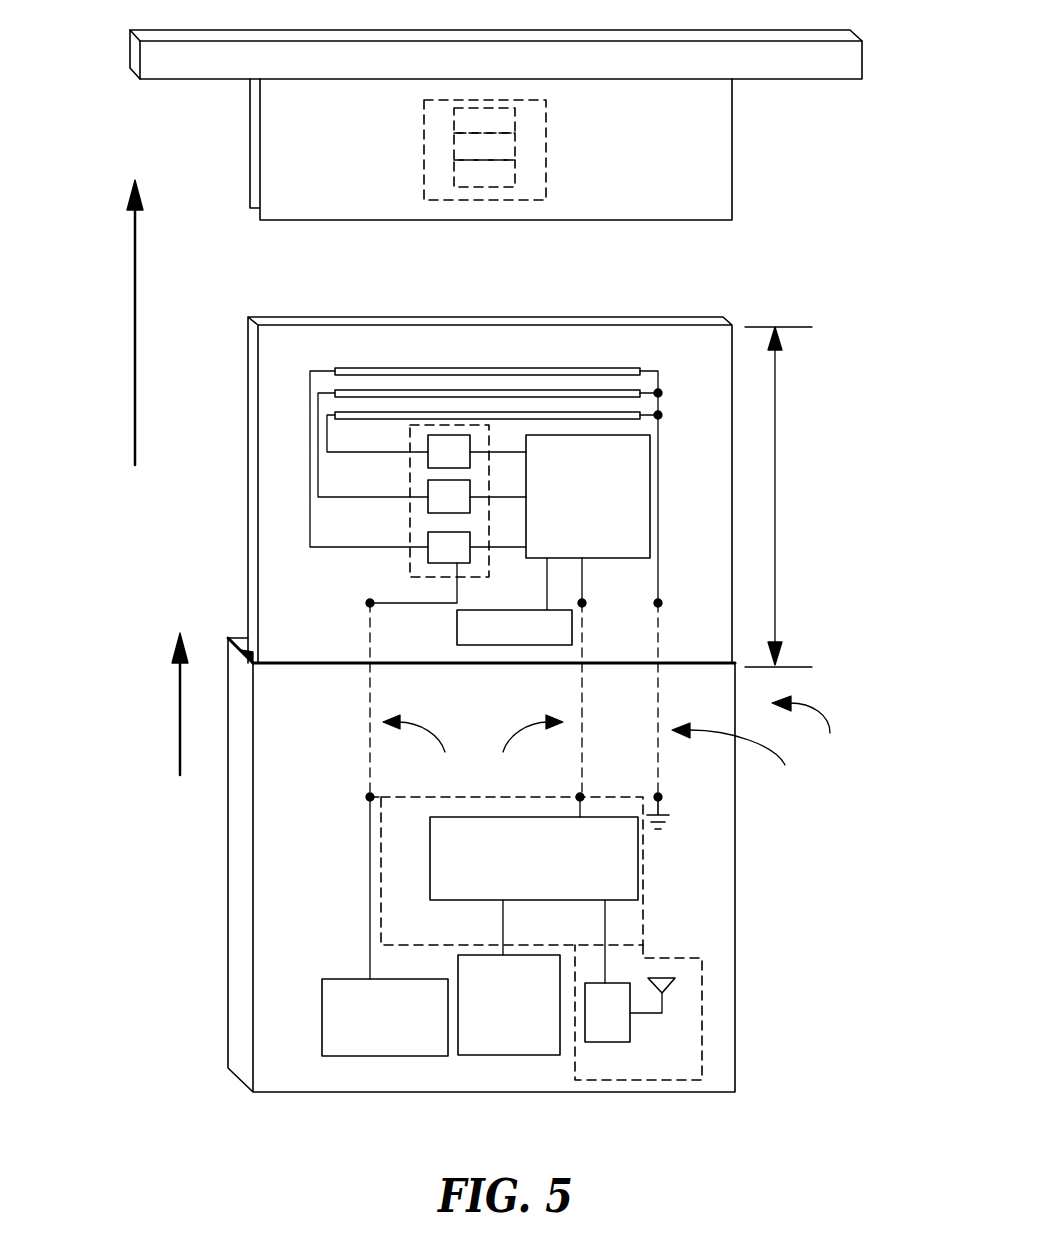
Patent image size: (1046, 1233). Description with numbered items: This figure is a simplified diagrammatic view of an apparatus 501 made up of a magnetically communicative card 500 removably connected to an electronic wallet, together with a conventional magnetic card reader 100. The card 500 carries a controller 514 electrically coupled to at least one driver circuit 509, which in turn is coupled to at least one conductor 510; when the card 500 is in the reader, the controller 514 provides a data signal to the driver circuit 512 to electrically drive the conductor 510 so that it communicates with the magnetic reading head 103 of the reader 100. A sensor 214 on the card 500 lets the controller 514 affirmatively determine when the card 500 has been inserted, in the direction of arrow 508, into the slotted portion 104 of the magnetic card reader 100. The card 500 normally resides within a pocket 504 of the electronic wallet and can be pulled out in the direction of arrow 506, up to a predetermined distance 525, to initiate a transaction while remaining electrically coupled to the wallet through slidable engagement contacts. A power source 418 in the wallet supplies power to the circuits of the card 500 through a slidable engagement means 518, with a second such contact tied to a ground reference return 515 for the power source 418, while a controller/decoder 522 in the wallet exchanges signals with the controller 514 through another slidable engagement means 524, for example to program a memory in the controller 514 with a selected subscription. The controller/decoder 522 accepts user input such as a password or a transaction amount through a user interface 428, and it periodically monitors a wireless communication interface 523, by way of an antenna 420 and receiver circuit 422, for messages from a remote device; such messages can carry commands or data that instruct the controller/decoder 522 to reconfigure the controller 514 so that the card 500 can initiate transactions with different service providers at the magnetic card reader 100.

The magnetic card reader 100 is at (808, 42).
The magnetic reading head 103 is at (515, 117).
The slotted portion 104 is at (277, 103).
The magnetically communicative card 500 is at (640, 317).
The conductor 510 is at (532, 277).
The arrow 508 is at (133, 340).
The driver circuit 509 is at (410, 530).
The driver circuit 512 is at (441, 566).
The controller 514 is at (650, 518).
The sensor 214 is at (457, 620).
The predetermined distance 525 is at (778, 497).
The pocket 504 is at (736, 688).
The arrow 506 is at (180, 723).
The apparatus 501 is at (814, 732).
The slidable engagement means 518 is at (588, 700).
The slidable engagement means 524 is at (534, 700).
The ground reference return 515 is at (665, 797).
The controller/decoder 522 is at (430, 862).
The power source 418 is at (322, 1033).
The user interface 428 is at (497, 1055).
The receiver circuit 422 is at (595, 1042).
The antenna 420 is at (663, 1000).
The wireless communication interface 523 is at (702, 1075).